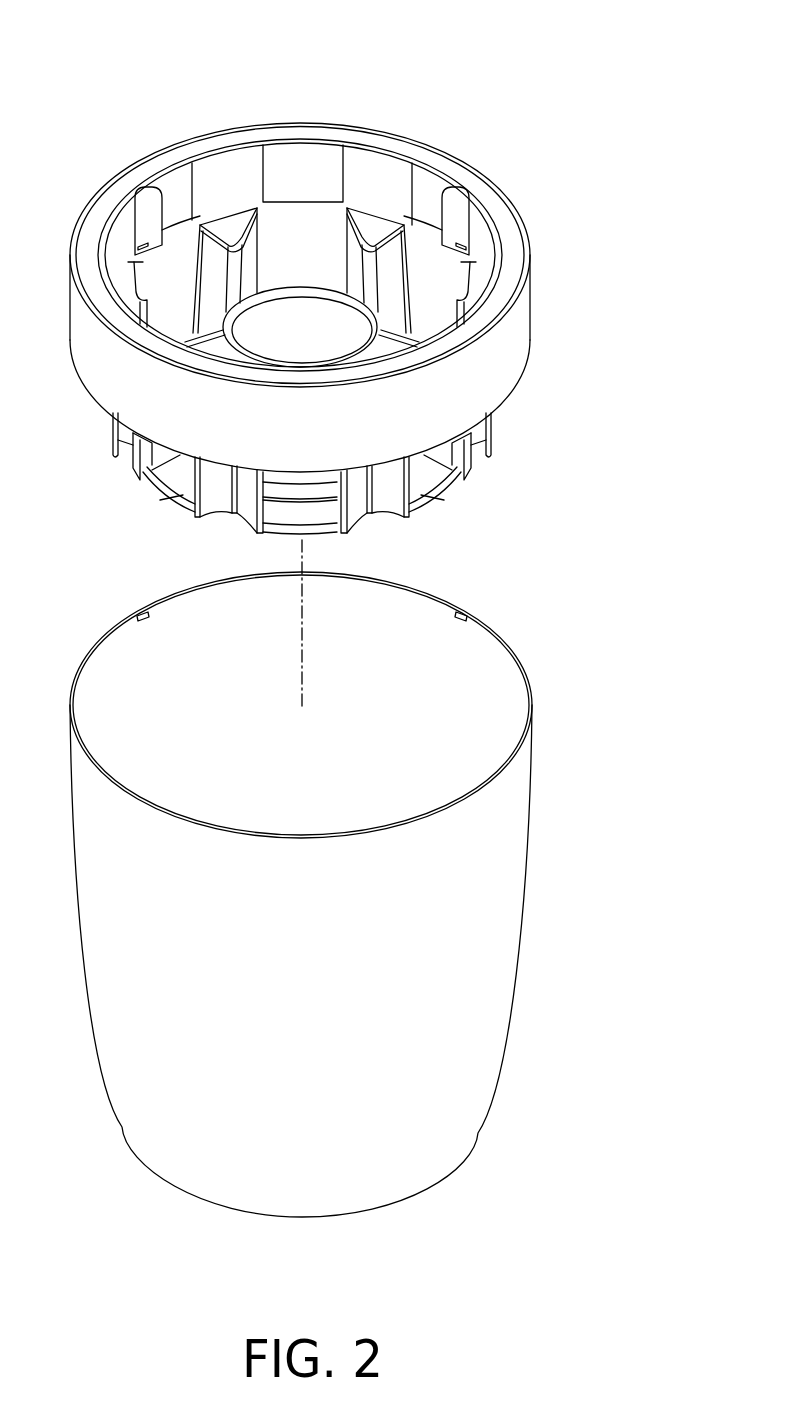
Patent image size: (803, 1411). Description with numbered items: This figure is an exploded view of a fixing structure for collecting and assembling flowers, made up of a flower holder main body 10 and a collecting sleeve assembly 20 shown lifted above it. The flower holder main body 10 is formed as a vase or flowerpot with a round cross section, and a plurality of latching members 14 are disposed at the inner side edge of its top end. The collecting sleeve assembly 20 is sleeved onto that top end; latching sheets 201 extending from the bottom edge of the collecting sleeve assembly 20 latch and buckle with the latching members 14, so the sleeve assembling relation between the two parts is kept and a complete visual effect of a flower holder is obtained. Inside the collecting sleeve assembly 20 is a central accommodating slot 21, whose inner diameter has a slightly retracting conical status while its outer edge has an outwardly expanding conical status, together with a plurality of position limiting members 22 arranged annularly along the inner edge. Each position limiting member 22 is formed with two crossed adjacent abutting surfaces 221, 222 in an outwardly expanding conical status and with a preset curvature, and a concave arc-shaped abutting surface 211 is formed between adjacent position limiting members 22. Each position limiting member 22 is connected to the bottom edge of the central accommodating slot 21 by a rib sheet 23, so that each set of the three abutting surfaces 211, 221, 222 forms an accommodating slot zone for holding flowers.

The flower holder main body 10 is at (545, 943).
The latching member 14 is at (460, 620).
The collecting sleeve assembly 20 is at (548, 282).
The latching sheet 201 is at (133, 430).
The central accommodating slot 21 is at (305, 313).
The abutting surface 211 is at (293, 287).
The position limiting member 22 is at (377, 222).
The abutting surface 221 is at (390, 263).
The abutting surface 222 is at (355, 247).
The rib sheet 23 is at (422, 477).